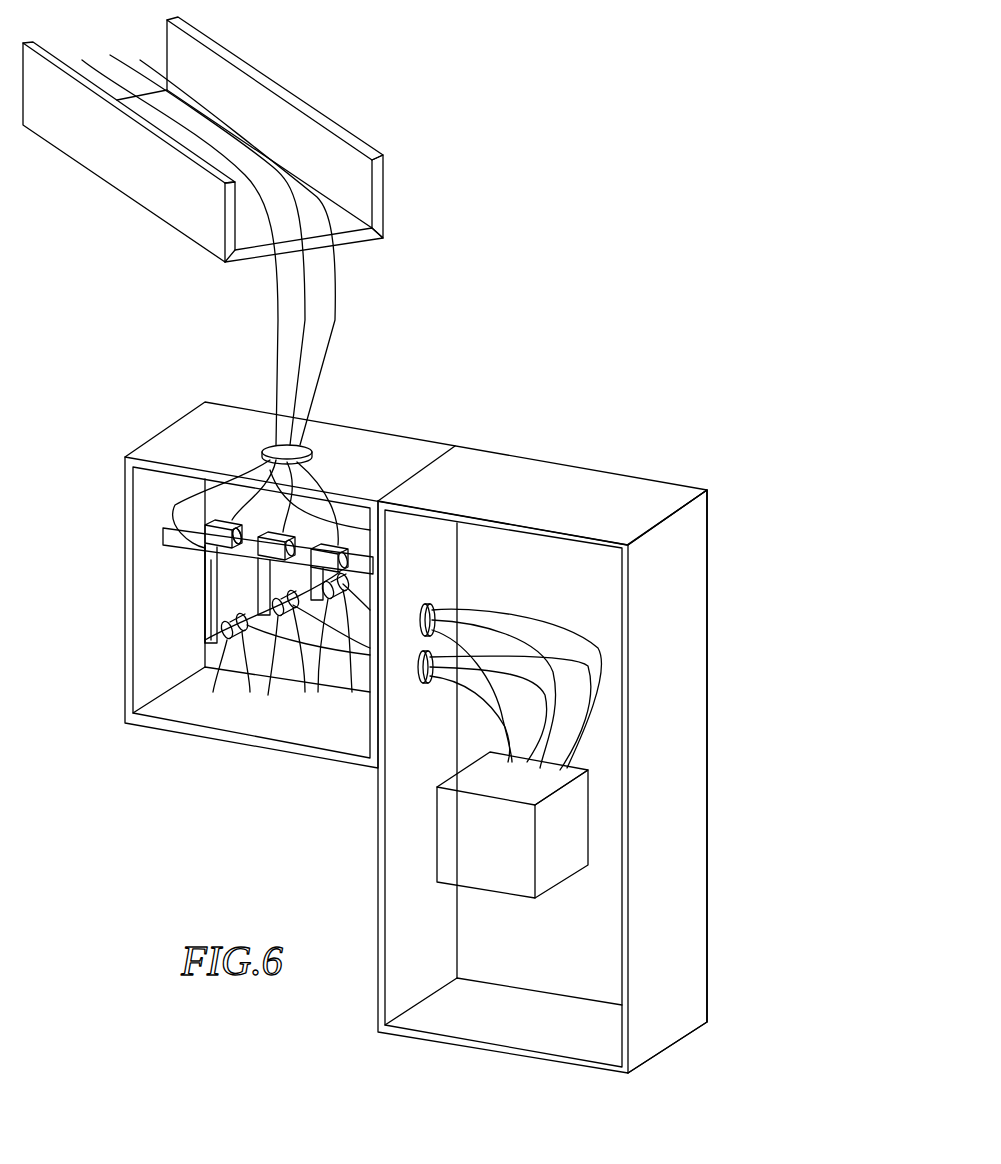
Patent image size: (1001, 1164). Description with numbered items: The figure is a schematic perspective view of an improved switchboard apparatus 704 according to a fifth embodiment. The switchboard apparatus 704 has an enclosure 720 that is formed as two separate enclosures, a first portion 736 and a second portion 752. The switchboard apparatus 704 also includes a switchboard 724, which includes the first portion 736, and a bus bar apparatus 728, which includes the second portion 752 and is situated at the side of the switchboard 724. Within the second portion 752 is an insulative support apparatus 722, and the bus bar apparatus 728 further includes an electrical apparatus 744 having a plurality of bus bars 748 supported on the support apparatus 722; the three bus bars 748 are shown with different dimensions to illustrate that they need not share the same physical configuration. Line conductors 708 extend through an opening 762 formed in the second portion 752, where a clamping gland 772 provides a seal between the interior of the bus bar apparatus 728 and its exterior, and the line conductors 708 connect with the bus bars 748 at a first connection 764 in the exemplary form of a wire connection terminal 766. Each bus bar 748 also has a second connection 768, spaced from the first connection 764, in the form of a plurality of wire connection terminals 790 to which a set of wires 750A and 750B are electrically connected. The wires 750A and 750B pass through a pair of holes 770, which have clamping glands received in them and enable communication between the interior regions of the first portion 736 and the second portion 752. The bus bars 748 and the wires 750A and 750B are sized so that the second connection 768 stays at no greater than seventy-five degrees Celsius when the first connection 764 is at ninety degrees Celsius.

The switchboard apparatus 704 is at (498, 433).
The line conductors 708 is at (278, 273).
The enclosure 720 is at (577, 462).
The support apparatus 722 is at (165, 537).
The switchboard 724 is at (710, 525).
The bus bar apparatus 728 is at (200, 578).
The first portion 736 is at (708, 643).
The electrical apparatus 744 is at (200, 597).
The bus bars 748 is at (345, 527).
The wire 750A is at (463, 675).
The wire 750B is at (463, 608).
The second portion 752 is at (368, 437).
The opening 762 is at (313, 468).
The first connection 764 is at (285, 520).
The wire connection terminal 766 is at (223, 515).
The second connection 768 is at (262, 620).
The holes 770 is at (418, 610).
The clamping gland 772 is at (272, 450).
The wire connection terminals 790 is at (223, 640).